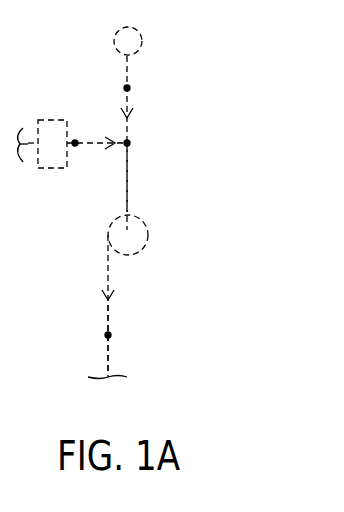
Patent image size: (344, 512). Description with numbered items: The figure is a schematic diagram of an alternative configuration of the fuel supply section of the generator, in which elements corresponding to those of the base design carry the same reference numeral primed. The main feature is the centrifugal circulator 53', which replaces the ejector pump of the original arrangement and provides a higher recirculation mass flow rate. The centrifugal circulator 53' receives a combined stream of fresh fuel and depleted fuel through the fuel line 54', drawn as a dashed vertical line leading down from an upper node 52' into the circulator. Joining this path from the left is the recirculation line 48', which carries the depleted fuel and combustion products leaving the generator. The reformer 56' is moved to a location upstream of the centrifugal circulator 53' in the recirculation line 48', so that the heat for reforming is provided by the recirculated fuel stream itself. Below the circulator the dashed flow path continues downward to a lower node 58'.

The inlet node 52' is at (153, 38).
The recirculation line 48' is at (76, 116).
The fuel line 54' is at (153, 179).
The reformer 56' is at (54, 171).
The centrifugal circulator 53' is at (154, 230).
The outlet line 58' is at (134, 338).